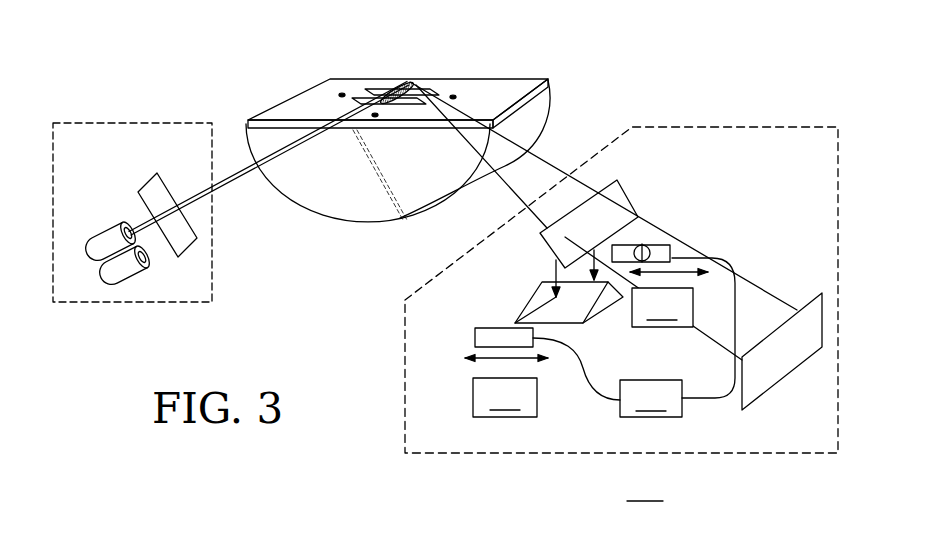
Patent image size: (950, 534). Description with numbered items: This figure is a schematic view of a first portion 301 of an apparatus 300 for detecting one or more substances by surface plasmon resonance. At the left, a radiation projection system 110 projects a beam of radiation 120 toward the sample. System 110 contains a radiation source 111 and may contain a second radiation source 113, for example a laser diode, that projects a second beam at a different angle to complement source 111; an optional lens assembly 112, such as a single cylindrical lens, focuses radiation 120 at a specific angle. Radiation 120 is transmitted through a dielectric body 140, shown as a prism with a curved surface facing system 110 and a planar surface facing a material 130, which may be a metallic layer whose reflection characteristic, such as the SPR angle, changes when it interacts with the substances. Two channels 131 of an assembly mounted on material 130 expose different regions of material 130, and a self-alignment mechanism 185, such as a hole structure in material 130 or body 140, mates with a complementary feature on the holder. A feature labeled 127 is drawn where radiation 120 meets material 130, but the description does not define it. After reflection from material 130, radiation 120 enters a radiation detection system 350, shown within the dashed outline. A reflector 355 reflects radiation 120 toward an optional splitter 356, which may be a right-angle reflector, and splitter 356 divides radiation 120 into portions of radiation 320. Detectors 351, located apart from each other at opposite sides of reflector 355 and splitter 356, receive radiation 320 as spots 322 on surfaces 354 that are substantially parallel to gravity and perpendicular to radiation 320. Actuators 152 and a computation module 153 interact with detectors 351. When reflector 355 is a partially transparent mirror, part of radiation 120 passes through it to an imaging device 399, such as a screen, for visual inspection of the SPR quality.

The radiation projection system 110 is at (107, 303).
The radiation source 111 is at (110, 237).
The lens assembly 112 is at (148, 187).
The second radiation source 113 is at (136, 268).
The radiation 120 is at (240, 172).
The irradiation spot 127 is at (393, 83).
The material 130 is at (297, 105).
The channels 131 is at (415, 99).
The dielectric body 140 is at (322, 205).
The self-alignment mechanism 185 is at (470, 94).
The first portion 301 is at (752, 63).
The apparatus 300 is at (645, 489).
The radiation detection system 350 is at (718, 455).
The radiation 320 is at (633, 212).
The spots 322 is at (660, 252).
The surfaces 354 is at (676, 250).
The reflector 355 is at (614, 246).
The splitter 356 is at (600, 308).
The detectors 351 is at (708, 270).
The actuators 152 is at (583, 352).
The computation module 153 is at (651, 398).
The imaging device 399 is at (781, 373).